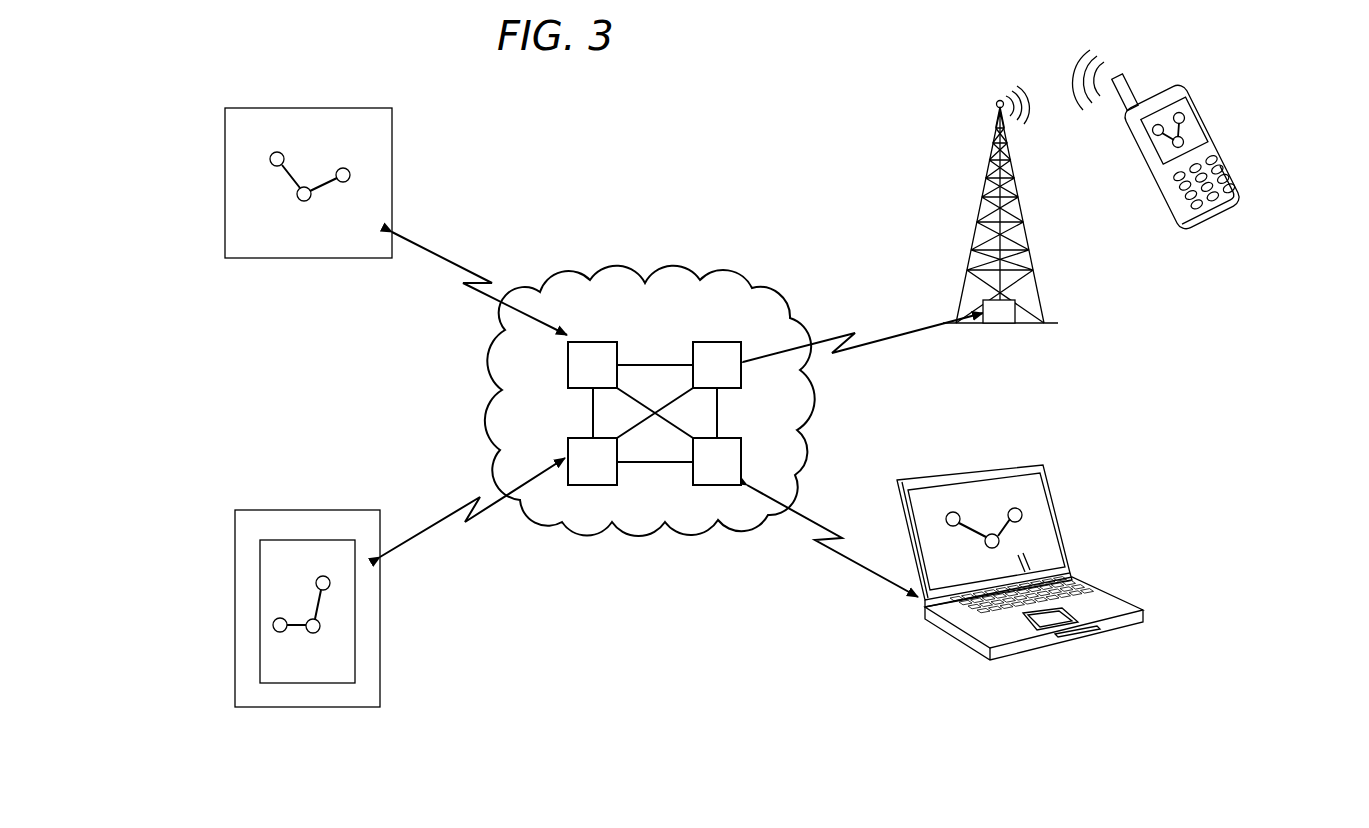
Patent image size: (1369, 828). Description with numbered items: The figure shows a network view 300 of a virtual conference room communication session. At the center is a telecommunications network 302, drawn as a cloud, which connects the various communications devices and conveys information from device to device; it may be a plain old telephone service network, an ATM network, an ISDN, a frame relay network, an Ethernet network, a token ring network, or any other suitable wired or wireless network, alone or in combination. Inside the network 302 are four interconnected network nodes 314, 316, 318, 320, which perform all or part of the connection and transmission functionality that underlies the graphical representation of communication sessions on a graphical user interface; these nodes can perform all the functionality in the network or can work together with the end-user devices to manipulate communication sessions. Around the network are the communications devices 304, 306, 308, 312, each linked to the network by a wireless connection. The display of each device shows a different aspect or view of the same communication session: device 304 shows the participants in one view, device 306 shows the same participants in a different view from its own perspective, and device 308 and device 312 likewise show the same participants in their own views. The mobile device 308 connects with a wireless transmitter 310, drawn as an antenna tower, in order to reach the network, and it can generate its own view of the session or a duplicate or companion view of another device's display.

The network view 300 is at (768, 112).
The telecommunications network 302 is at (655, 266).
The communications device 304 is at (307, 620).
The communications device 306 is at (324, 195).
The mobile device 308 is at (1200, 160).
The wireless transmitter 310 is at (1000, 325).
The communications device 312 is at (1020, 561).
The network node 314 is at (718, 485).
The network node 316 is at (720, 342).
The network node 318 is at (568, 360).
The network node 320 is at (593, 485).